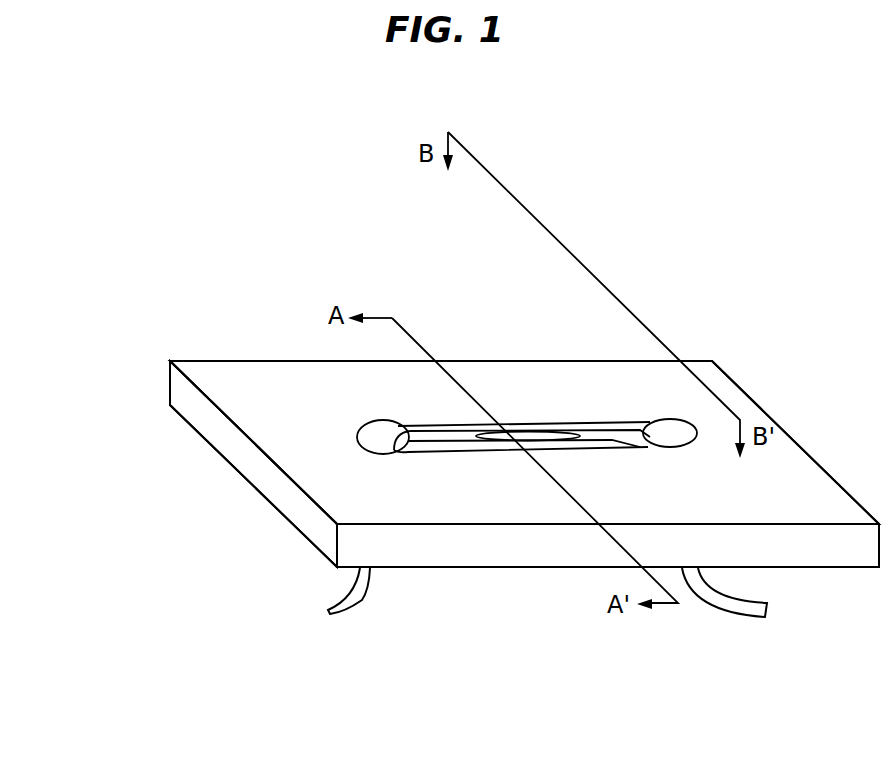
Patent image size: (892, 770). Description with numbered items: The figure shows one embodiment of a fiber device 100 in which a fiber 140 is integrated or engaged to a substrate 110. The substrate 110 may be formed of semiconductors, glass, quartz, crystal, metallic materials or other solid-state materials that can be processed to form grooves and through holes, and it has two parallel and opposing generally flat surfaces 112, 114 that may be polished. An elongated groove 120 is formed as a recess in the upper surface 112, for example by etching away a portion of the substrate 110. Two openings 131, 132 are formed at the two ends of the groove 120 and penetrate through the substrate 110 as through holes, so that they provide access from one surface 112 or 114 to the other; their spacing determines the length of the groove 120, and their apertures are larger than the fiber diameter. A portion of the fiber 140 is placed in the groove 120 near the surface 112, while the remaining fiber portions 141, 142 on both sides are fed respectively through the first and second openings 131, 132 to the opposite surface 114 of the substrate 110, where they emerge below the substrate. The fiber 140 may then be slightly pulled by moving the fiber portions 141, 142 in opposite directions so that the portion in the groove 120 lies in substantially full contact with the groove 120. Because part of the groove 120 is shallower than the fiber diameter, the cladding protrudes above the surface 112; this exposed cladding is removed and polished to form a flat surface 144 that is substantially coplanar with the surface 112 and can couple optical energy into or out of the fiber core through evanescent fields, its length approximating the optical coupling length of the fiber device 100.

The fiber device 100 is at (240, 208).
The substrate 110 is at (175, 392).
The substrate surface 112 is at (218, 380).
The substrate surface 114 is at (208, 442).
The elongated groove 120 is at (472, 430).
The first opening 131 is at (378, 442).
The second opening 132 is at (688, 438).
The fiber 140 is at (622, 443).
The fiber portion 141 is at (362, 600).
The fiber portion 142 is at (755, 613).
The flat surface 144 is at (538, 438).